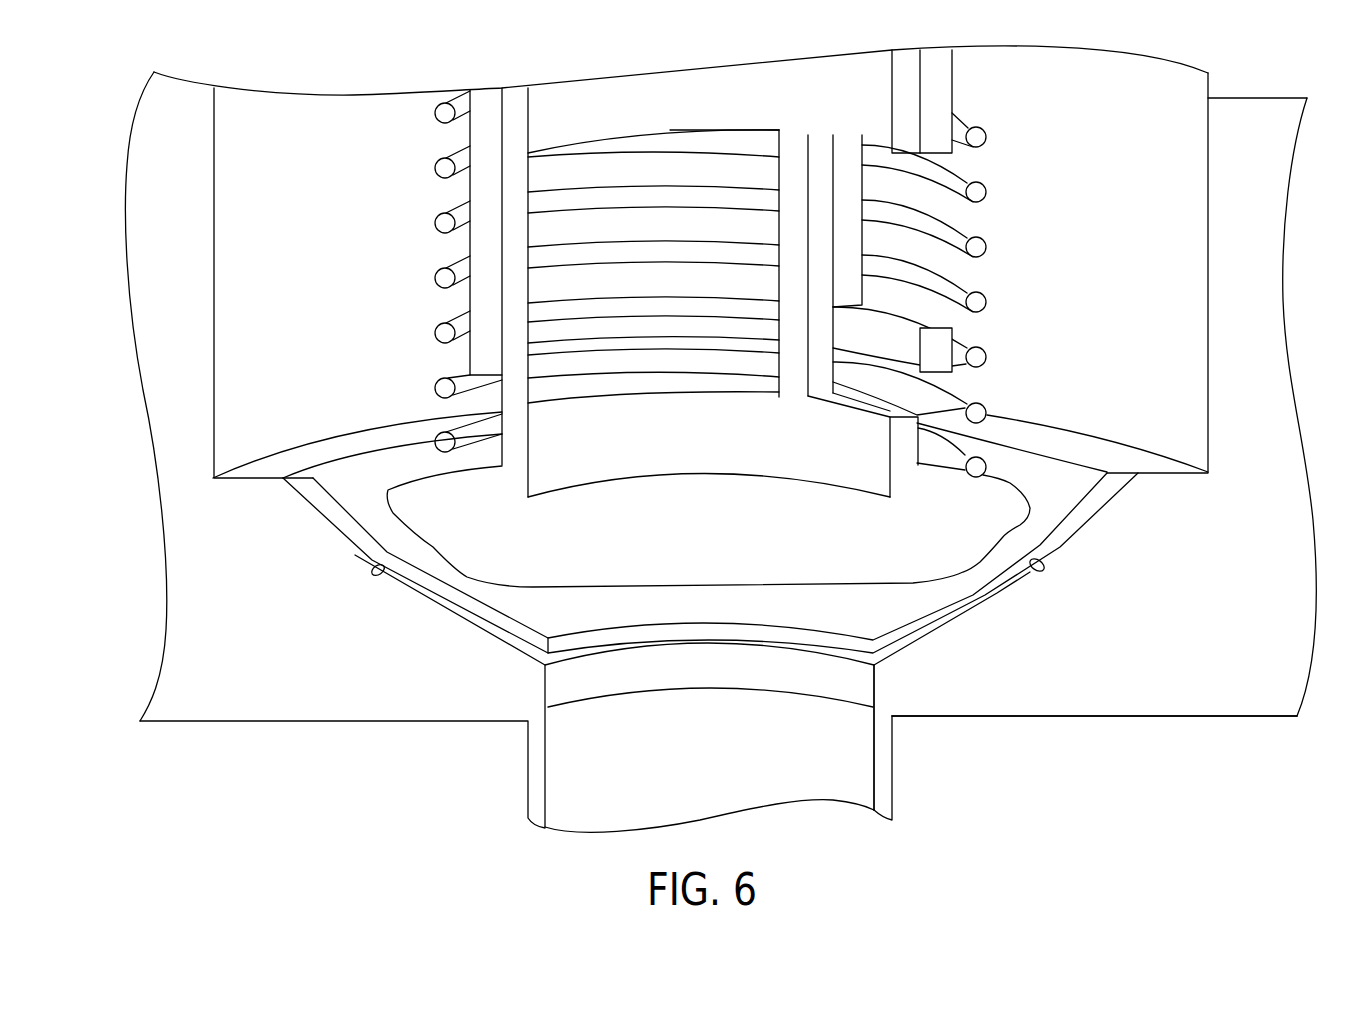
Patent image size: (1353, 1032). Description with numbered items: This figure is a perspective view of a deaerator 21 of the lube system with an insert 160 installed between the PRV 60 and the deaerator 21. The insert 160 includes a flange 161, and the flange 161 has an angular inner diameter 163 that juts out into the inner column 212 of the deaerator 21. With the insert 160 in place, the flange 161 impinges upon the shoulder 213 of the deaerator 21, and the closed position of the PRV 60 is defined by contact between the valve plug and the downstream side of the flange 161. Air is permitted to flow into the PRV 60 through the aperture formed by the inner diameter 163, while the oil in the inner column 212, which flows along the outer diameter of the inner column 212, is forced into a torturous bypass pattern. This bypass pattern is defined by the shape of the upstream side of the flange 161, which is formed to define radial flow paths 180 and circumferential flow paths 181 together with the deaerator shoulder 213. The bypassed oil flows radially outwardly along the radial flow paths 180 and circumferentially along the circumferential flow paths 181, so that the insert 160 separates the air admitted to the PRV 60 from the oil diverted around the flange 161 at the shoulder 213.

The deaerator 21 is at (478, 658).
The PRV 60 is at (457, 543).
The insert 160 is at (642, 598).
The flange 161 is at (523, 612).
The angular inner diameter 163 is at (830, 639).
The radial flow paths 180 is at (993, 590).
The circumferential flow paths 181 is at (372, 569).
The inner column 212 is at (879, 758).
The shoulder 213 is at (1033, 613).